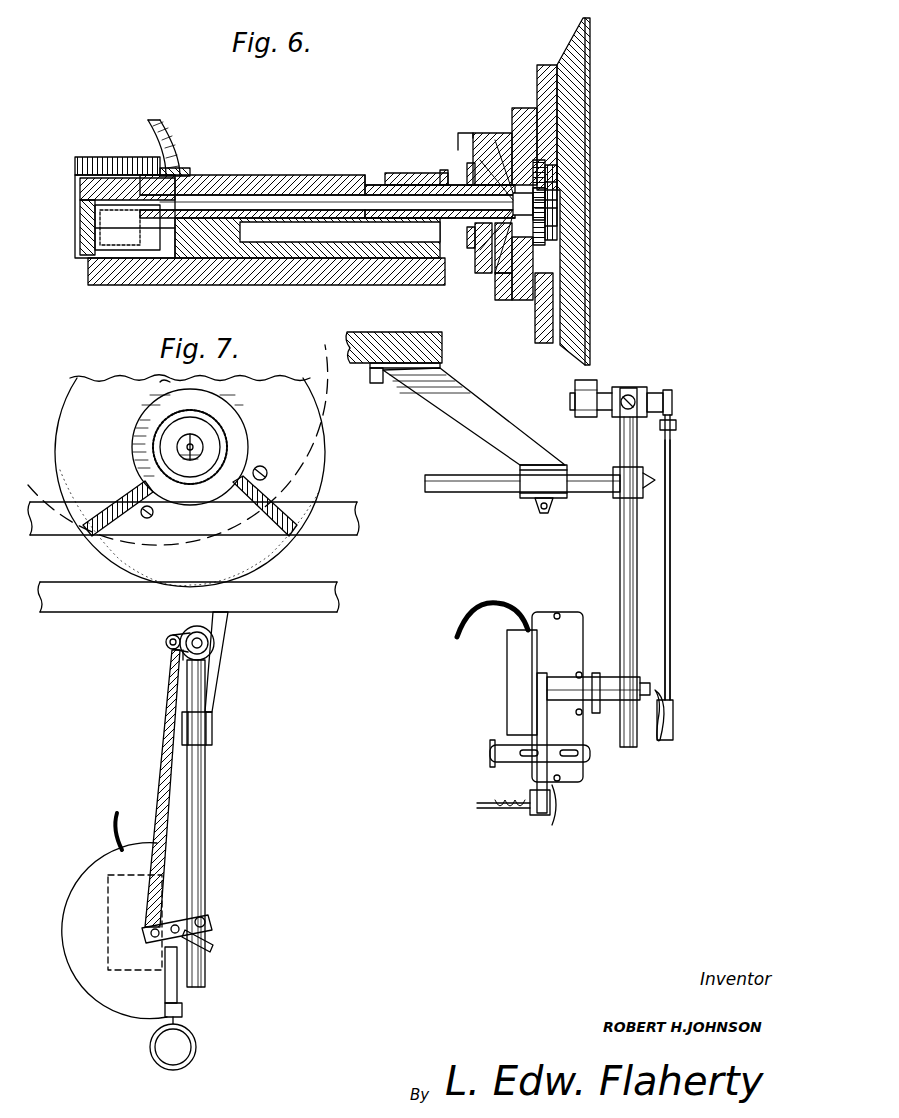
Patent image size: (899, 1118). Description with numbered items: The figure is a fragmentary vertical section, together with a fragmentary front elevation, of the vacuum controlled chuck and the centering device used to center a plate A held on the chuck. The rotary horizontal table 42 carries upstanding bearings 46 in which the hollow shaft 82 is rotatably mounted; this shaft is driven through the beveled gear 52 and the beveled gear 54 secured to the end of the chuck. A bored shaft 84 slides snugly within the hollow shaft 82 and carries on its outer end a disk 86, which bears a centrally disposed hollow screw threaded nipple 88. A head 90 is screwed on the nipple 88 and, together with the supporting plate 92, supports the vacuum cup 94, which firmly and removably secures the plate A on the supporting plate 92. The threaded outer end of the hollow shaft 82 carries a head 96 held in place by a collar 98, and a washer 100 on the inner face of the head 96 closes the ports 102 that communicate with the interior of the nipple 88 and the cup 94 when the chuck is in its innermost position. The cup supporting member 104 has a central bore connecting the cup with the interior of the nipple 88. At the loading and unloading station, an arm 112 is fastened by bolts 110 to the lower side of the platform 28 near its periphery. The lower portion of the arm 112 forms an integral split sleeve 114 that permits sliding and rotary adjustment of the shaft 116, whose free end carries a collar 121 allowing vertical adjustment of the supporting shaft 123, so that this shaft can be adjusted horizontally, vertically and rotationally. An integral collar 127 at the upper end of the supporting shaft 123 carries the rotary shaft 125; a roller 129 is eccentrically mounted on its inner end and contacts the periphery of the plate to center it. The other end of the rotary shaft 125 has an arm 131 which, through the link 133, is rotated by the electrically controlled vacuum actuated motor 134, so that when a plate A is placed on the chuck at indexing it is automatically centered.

In FIG. 6, the rotary horizontal table 42 is at (275, 270).
In FIG. 7, the rotary horizontal table 42 is at (343, 530).
In FIG. 6, the beveled gear 52 is at (100, 158).
In FIG. 6, the beveled gear 54 is at (182, 155).
In FIG. 6, the hollow shaft 82 is at (287, 176).
In FIG. 6, the bored shaft 84 is at (350, 185).
In FIG. 6, the upstanding bearing 46 is at (400, 173).
In FIG. 6, the head 96 is at (458, 150).
In FIG. 6, the disk 86 is at (495, 133).
In FIG. 6, the head 90 is at (520, 108).
In FIG. 6, the supporting plate 92 is at (547, 65).
In FIG. 7, the supporting plate 92 is at (280, 545).
In FIG. 6, the plate A is at (590, 48).
In FIG. 7, the plate A is at (70, 600).
In FIG. 6, the vacuum cup 94 is at (560, 175).
In FIG. 7, the vacuum cup 94 is at (200, 480).
In FIG. 6, the cup supporting member 104 is at (545, 193).
In FIG. 7, the cup supporting member 104 is at (180, 447).
In FIG. 6, the ports 102 is at (557, 205).
In FIG. 6, the collar 98 is at (470, 248).
In FIG. 6, the washer 100 is at (480, 273).
In FIG. 6, the hollow screw threaded nipple 88 is at (502, 280).
In FIG. 6, the platform 28 is at (442, 350).
In FIG. 7, the platform 28 is at (325, 612).
In FIG. 6, the bolts 110 is at (376, 383).
In FIG. 6, the arm 112 is at (462, 404).
In FIG. 7, the arm 112 is at (216, 670).
In FIG. 6, the split sleeve 114 is at (545, 482).
In FIG. 6, the shaft 116 is at (577, 492).
In FIG. 6, the supporting shaft 123 is at (620, 548).
In FIG. 7, the supporting shaft 123 is at (200, 838).
In FIG. 6, the collar 127 is at (636, 376).
In FIG. 6, the roller 129 is at (580, 414).
In FIG. 7, the roller 129 is at (180, 660).
In FIG. 6, the rotary shaft 125 is at (658, 393).
In FIG. 6, the arm 131 is at (676, 412).
In FIG. 7, the arm 131 is at (166, 637).
In FIG. 6, the collar 121 is at (655, 480).
In FIG. 7, the collar 121 is at (212, 735).
In FIG. 6, the link 133 is at (670, 560).
In FIG. 7, the link 133 is at (160, 790).
In FIG. 6, the electrically controlled vacuum actuated motor 134 is at (570, 735).
In FIG. 7, the electrically controlled vacuum actuated motor 134 is at (98, 880).